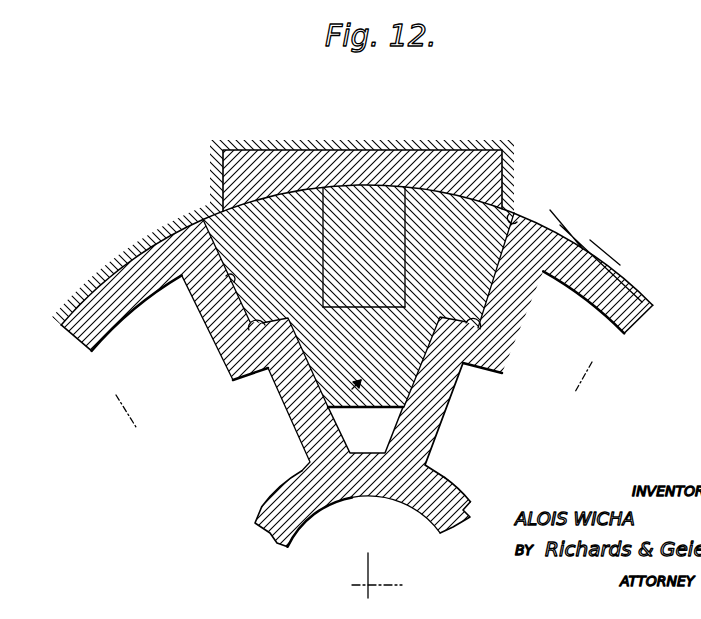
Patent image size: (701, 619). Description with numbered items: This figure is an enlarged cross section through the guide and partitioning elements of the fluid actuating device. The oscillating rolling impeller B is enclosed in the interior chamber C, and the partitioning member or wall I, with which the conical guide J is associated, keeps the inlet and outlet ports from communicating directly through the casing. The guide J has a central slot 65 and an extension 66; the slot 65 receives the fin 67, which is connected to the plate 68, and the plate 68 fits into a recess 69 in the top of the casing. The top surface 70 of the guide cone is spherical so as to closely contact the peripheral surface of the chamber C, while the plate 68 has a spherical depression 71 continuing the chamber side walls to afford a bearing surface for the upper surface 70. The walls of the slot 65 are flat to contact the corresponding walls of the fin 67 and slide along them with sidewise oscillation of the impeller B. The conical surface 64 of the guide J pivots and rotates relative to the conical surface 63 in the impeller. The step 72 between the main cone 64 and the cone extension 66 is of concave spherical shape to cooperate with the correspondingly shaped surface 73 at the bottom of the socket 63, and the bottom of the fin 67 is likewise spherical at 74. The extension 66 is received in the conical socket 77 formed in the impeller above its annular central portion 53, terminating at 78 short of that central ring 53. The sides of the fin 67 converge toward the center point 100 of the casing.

The interior cylindrical surface 53 is at (408, 498).
The conical surface 63 is at (223, 275).
The conical surface 64 is at (240, 287).
The central slot 65 is at (405, 225).
The extension 66 is at (320, 356).
The fin 67 is at (380, 207).
The plate 68 is at (483, 158).
The recess 69 is at (277, 150).
The top surface of the guide cone 70 is at (518, 220).
The spherical depression 71 is at (480, 195).
The step 72 is at (246, 325).
The spherical surface 73 is at (251, 327).
The spherical bottom of the fin 74 is at (400, 290).
The conical socket 77 is at (415, 380).
The extension end 78 is at (368, 408).
The center point 100 is at (366, 586).
The partitioning member I is at (400, 150).
The conical guide J is at (307, 438).
The interior chamber C is at (163, 243).
The oscillating rolling impeller B is at (260, 507).